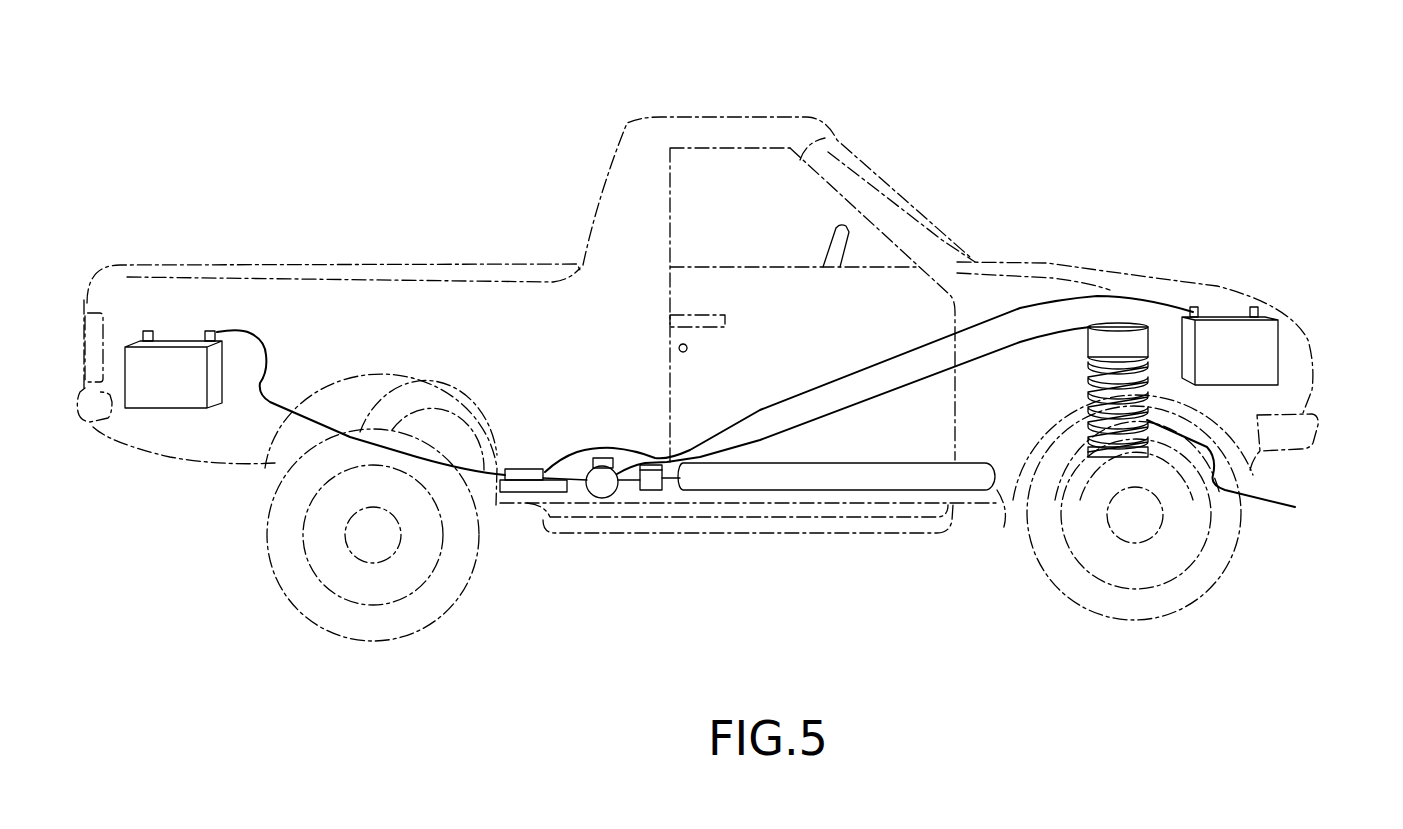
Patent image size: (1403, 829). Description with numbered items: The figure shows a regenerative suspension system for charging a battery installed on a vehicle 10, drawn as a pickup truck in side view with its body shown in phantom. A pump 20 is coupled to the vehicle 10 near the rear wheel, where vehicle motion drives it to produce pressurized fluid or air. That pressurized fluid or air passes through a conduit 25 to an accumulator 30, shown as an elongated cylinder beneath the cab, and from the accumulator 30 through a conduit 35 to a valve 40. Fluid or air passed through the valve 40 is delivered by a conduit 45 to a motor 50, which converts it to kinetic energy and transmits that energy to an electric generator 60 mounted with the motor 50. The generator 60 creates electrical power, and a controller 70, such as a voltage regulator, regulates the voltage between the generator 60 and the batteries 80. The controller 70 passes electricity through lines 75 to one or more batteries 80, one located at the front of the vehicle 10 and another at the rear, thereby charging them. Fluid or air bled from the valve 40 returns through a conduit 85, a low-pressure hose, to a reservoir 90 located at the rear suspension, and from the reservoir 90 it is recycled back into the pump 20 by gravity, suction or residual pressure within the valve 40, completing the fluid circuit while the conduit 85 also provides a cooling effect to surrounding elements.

The vehicle 10 is at (783, 118).
The pump 20 is at (1232, 473).
The conduit 25 is at (1003, 460).
The accumulator 30 is at (863, 480).
The conduit 35 is at (670, 478).
The valve 40 is at (653, 490).
The conduit 45 is at (630, 487).
The motor 50 is at (603, 483).
The electric generator 60 is at (600, 458).
The controller 70 is at (523, 492).
The line 75 is at (270, 349).
The battery 80 is at (148, 395).
The conduit 85 is at (1035, 337).
The reservoir 90 is at (1135, 342).